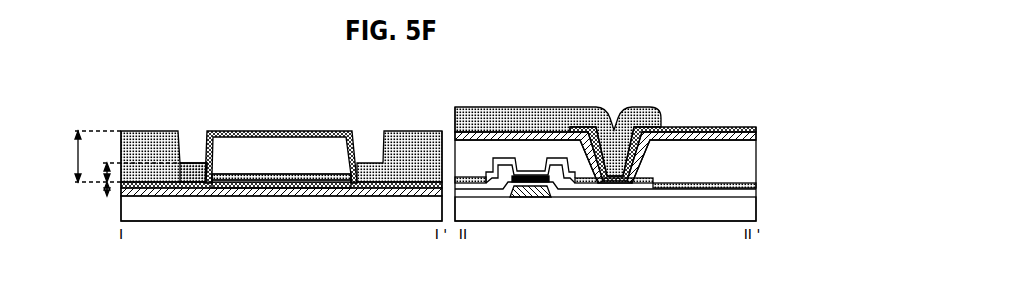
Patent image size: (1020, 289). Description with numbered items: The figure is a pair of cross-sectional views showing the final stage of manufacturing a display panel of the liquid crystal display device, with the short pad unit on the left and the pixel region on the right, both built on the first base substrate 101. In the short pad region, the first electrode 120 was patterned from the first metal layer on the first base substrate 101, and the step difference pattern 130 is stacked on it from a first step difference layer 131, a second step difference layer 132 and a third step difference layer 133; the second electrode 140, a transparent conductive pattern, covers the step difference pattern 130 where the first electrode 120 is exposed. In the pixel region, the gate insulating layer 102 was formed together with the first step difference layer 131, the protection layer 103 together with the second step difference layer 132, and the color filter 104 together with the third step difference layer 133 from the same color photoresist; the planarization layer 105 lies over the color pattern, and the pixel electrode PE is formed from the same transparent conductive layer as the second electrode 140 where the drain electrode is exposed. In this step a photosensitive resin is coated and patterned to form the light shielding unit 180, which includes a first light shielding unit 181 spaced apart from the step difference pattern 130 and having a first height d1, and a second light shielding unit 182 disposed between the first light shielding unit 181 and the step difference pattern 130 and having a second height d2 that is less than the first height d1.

The first base substrate 101 is at (757, 209).
The gate insulating layer 102 is at (757, 193).
The protection layer 103 is at (757, 185).
The color filter 104 is at (757, 157).
The planarization layer 105 is at (757, 137).
The pixel electrode PE is at (742, 128).
The first electrode 120 is at (185, 198).
The step difference pattern 130 is at (238, 255).
The first step difference layer 131 is at (237, 187).
The second step difference layer 132 is at (275, 183).
The third step difference layer 133 is at (304, 168).
The second electrode 140 is at (327, 137).
The light shielding unit 180 is at (150, 97).
The first light shielding unit 181 is at (150, 139).
The second light shielding unit 182 is at (193, 166).
The first height d1 is at (89, 156).
The second height d2 is at (133, 179).